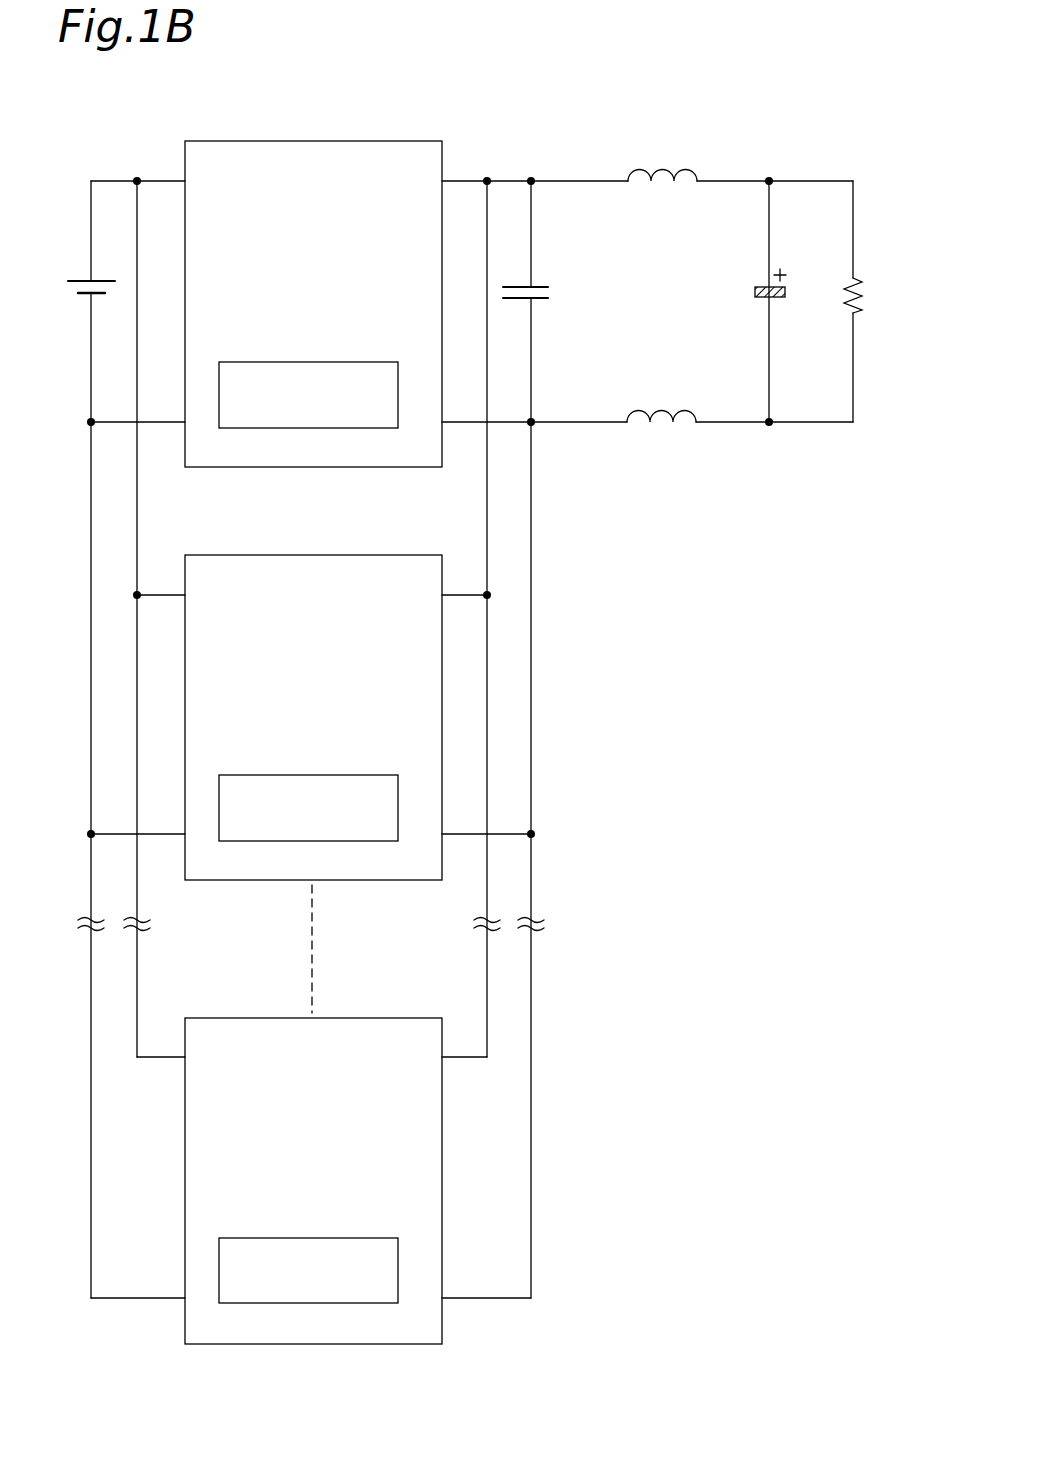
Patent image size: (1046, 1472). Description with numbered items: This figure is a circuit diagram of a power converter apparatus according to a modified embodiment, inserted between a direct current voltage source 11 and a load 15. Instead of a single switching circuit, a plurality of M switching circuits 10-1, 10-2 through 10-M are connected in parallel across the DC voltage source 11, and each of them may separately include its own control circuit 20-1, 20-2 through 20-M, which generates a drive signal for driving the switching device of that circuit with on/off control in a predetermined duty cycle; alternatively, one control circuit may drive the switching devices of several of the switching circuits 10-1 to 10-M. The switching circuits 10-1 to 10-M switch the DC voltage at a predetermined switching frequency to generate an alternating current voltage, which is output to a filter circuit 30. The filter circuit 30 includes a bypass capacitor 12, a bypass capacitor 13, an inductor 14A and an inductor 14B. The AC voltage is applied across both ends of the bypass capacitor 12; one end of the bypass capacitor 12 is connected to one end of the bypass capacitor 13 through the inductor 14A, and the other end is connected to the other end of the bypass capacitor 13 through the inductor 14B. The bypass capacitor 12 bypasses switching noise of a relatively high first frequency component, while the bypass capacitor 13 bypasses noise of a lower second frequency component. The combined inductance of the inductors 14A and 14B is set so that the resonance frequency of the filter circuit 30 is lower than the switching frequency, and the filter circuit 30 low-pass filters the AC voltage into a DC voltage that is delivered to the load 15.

The switching circuit 10-1 is at (240, 115).
The switching circuit 10-2 is at (240, 529).
The switching circuit 10-M is at (240, 992).
The control circuit 20-1 is at (323, 428).
The control circuit 20-2 is at (323, 841).
The control circuit 20-M is at (323, 1303).
The direct current voltage source 11 is at (76, 281).
The bypass capacitor 12 is at (536, 287).
The bypass capacitor 13 is at (784, 279).
The inductor 14A is at (660, 166).
The inductor 14B is at (659, 408).
The load 15 is at (858, 281).
The filter circuit 30 is at (667, 289).